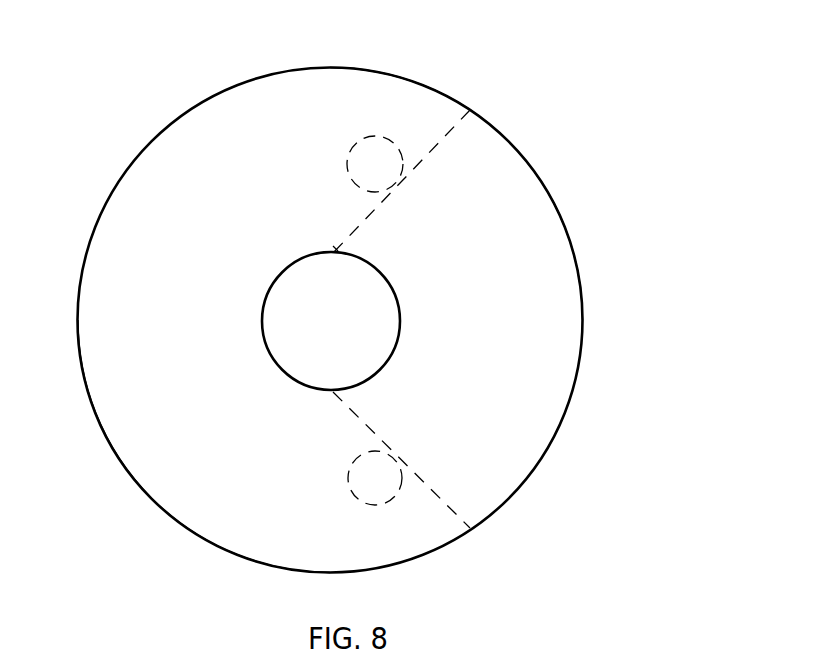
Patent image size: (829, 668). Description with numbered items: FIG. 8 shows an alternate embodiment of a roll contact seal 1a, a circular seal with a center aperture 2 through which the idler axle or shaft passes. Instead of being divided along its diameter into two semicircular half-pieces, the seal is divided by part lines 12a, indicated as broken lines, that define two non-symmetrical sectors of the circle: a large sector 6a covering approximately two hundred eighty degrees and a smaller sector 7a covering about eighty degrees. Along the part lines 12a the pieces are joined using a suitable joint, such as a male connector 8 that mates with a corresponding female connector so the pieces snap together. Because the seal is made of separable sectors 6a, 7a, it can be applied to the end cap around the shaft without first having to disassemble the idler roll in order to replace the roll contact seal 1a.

The roll contact seal 1a is at (184, 88).
The center aperture 2 is at (300, 348).
The sector 6a is at (138, 400).
The sector 7a is at (543, 305).
The male connector 8 is at (400, 138).
The part line 12a is at (363, 220).